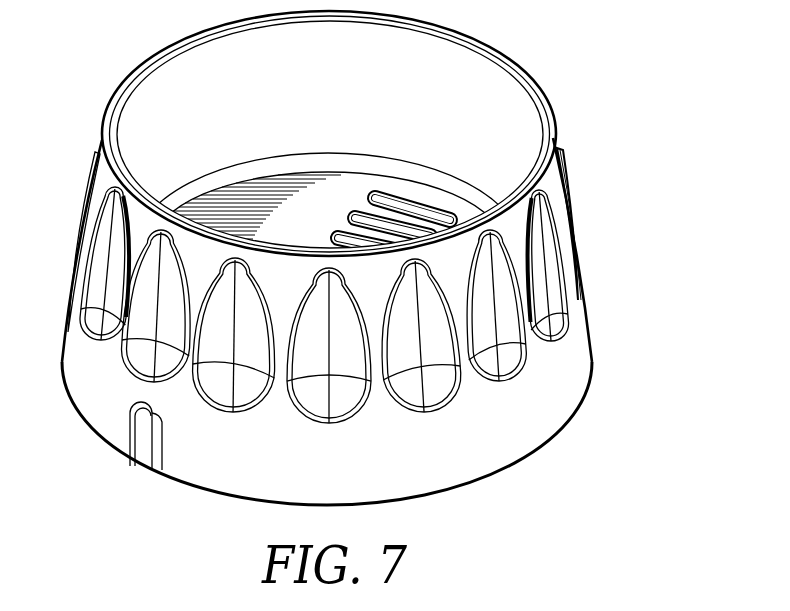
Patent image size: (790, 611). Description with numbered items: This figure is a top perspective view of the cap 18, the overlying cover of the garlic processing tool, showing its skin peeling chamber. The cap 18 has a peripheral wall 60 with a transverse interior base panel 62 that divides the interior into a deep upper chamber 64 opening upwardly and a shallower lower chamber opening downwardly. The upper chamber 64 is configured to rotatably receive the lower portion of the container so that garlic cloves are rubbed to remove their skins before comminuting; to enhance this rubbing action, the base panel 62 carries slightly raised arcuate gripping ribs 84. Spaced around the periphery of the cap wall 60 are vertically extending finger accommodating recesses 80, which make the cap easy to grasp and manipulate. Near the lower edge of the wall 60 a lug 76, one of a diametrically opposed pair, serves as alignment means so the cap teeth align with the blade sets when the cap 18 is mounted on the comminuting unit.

The cap 18 is at (347, 258).
The peripheral wall 60 is at (565, 356).
The base panel 62 is at (300, 190).
The upper chamber 64 is at (167, 92).
The lugs 76 is at (140, 448).
The finger accommodating recesses 80 is at (505, 292).
The gripping ribs 84 is at (395, 197).